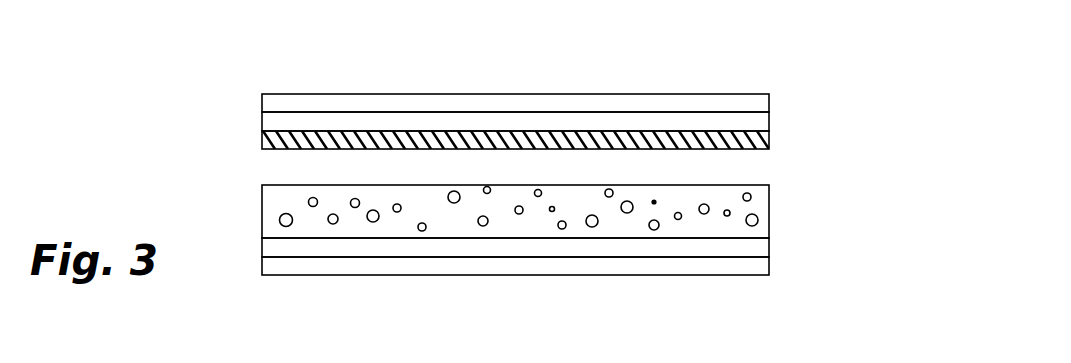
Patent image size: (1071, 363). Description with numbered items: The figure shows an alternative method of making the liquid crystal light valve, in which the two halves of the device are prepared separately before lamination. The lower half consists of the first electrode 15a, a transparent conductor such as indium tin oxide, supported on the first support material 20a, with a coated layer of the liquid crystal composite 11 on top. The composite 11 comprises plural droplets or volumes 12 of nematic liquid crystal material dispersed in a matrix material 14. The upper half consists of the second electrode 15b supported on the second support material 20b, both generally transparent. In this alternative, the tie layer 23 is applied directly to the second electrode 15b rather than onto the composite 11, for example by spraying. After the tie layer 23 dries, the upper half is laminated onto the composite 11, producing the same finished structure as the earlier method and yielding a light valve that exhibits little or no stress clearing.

The liquid crystal composite 11 is at (769, 200).
The volumes of liquid crystal material 12 is at (373, 222).
The matrix material 14 is at (272, 208).
The first electrode 15a is at (769, 237).
The second electrode 15b is at (769, 122).
The first support material 20a is at (769, 265).
The second support material 20b is at (769, 97).
The tie layer 23 is at (262, 138).